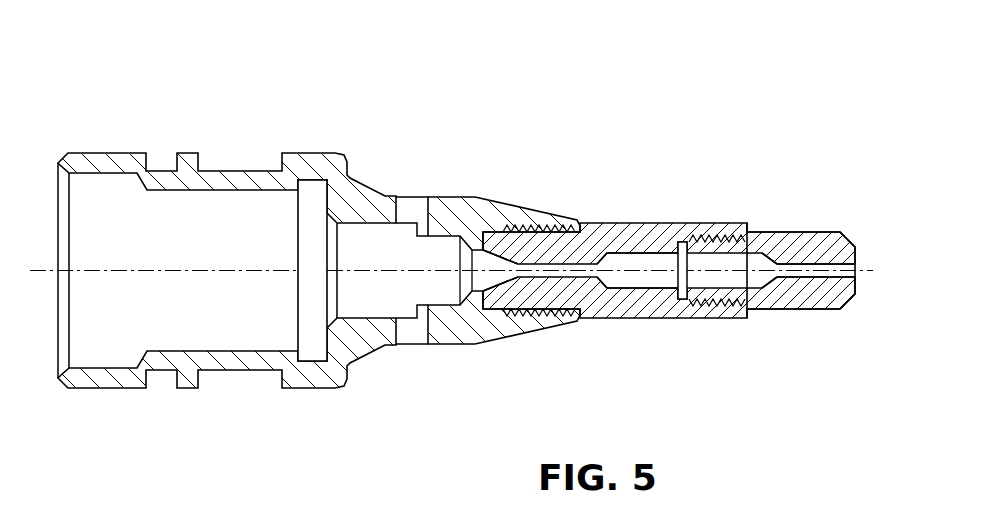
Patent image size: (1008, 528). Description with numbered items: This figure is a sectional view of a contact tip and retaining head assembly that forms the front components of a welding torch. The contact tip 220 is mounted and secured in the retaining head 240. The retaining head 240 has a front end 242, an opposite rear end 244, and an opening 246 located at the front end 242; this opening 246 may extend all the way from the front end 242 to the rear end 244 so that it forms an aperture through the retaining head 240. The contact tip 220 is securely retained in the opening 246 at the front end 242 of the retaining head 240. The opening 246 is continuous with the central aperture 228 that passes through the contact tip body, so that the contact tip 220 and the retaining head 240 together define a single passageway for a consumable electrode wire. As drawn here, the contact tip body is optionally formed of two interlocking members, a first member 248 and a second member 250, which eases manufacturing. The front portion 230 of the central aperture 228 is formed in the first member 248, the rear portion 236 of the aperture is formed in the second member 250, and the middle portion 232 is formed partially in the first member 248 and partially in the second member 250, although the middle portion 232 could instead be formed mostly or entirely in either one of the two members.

The contact tip 220 is at (679, 191).
The central aperture 228 is at (637, 256).
The front portion 230 is at (845, 258).
The middle portion 232 is at (671, 250).
The rear portion 236 is at (569, 260).
The retaining head 240 is at (282, 148).
The front end 242 is at (569, 328).
The rear end 244 is at (58, 381).
The opening 246 is at (582, 318).
The first member 248 is at (808, 308).
The second member 250 is at (710, 314).